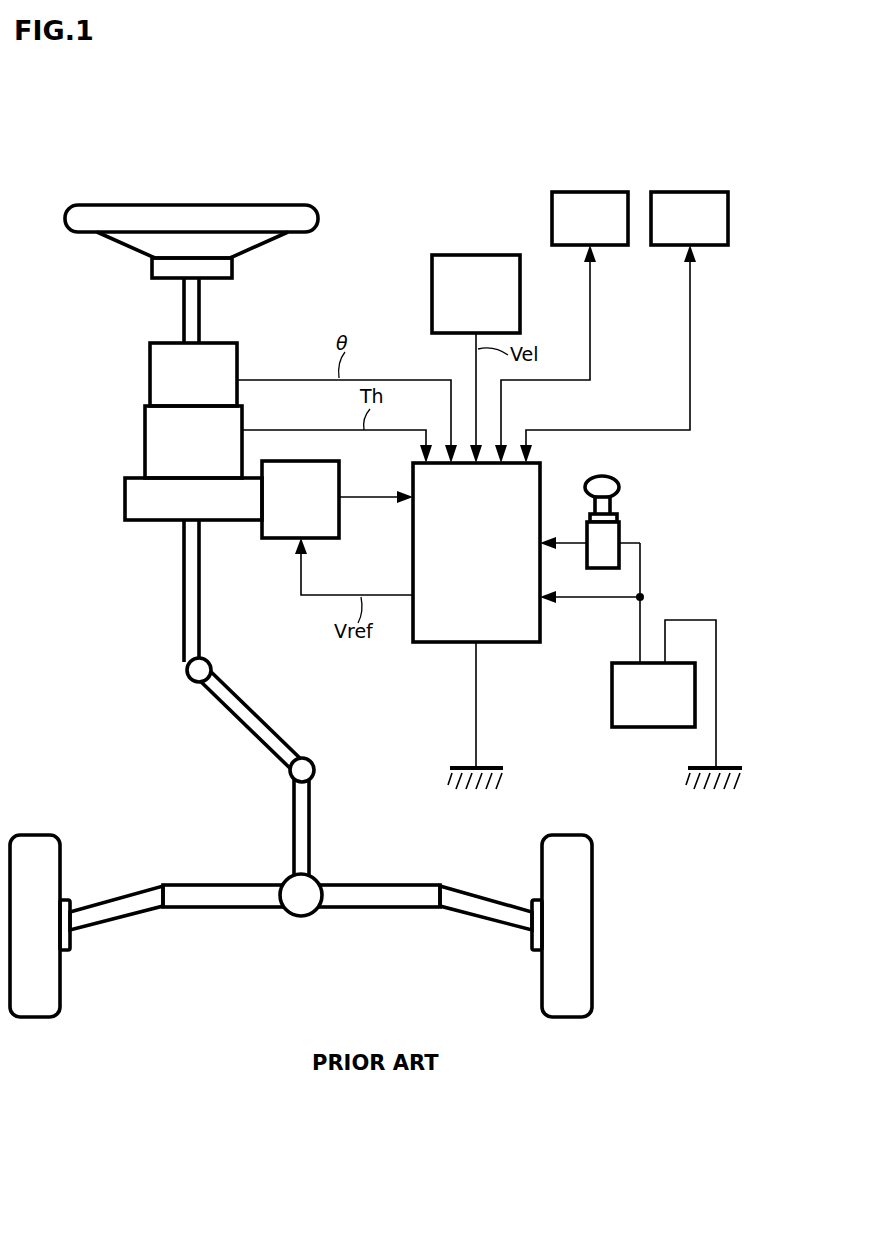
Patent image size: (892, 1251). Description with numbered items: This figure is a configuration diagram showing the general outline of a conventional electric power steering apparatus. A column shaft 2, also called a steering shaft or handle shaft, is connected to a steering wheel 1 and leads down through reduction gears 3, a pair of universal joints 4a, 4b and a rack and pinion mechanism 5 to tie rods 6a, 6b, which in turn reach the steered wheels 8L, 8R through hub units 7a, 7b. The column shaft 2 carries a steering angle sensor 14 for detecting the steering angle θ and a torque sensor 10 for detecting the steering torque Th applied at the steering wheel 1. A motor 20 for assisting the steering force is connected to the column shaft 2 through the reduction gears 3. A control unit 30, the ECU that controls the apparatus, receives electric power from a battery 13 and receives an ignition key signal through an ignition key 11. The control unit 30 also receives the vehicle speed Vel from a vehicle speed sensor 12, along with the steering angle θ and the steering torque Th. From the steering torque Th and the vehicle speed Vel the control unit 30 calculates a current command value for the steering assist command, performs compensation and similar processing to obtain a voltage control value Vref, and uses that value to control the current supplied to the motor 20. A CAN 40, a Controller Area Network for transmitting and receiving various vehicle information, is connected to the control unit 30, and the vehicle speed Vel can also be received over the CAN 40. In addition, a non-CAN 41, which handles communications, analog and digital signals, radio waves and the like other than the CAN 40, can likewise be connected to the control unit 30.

The steering wheel 1 is at (320, 213).
The column shaft 2 is at (182, 322).
The reduction gears 3 is at (125, 503).
The universal joint 4a is at (188, 678).
The universal joint 4b is at (290, 776).
The rack and pinion mechanism 5 is at (314, 877).
The tie rod 6a is at (98, 905).
The tie rod 6b is at (468, 902).
The hub unit 7a is at (70, 950).
The hub unit 7b is at (532, 950).
The steered wheel 8L is at (58, 1003).
The steered wheel 8R is at (544, 1003).
The torque sensor 10 is at (145, 432).
The ignition key 11 is at (621, 487).
The vehicle speed sensor 12 is at (521, 267).
The battery 13 is at (611, 690).
The steering angle sensor 14 is at (150, 378).
The motor 20 is at (340, 465).
The control unit 30 is at (541, 465).
The CAN 40 is at (718, 191).
The non-CAN 41 is at (617, 191).